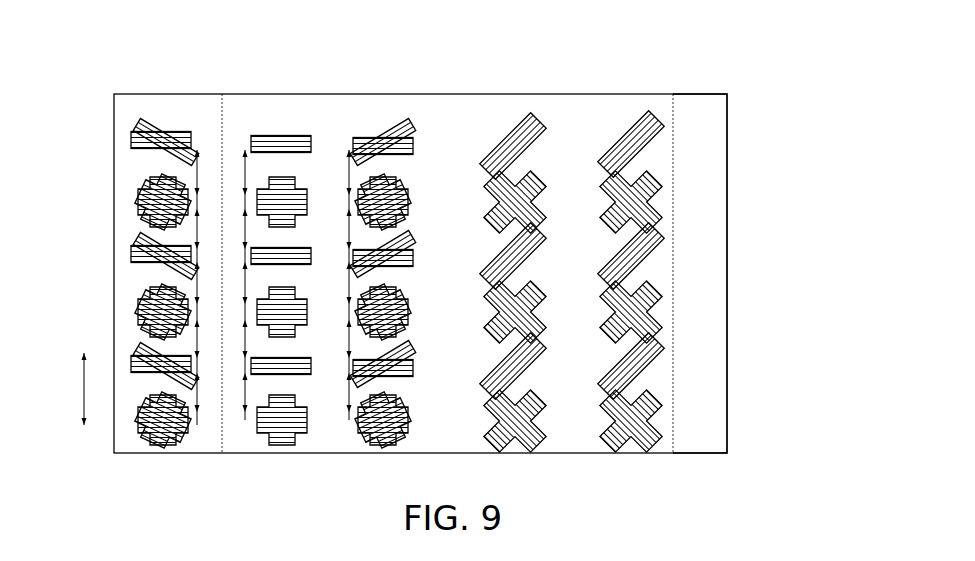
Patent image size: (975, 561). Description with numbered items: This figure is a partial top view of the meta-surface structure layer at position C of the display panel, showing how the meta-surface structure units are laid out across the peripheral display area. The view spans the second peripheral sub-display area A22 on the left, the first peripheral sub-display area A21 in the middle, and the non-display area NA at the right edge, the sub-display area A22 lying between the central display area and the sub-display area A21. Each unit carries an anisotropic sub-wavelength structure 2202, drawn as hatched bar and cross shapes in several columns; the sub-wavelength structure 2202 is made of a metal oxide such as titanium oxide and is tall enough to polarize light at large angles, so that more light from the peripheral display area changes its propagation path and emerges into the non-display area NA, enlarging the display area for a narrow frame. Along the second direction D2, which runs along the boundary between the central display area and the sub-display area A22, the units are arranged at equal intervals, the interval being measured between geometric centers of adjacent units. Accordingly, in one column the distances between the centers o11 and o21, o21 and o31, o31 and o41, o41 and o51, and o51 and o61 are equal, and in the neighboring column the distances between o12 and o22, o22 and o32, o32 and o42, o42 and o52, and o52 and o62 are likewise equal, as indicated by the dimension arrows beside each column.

The position C is at (113, 65).
The second peripheral sub-display area A22 is at (220, 105).
The first peripheral sub-display area A21 is at (460, 260).
The non-display area NA is at (727, 116).
The second direction D2 is at (86, 403).
The anisotropic sub-wavelength structure 2202 is at (645, 355).
The geometric center o11 is at (280, 146).
The geometric center o21 is at (284, 204).
The geometric center o31 is at (282, 258).
The geometric center o41 is at (284, 312).
The geometric center o51 is at (282, 368).
The geometric center o61 is at (284, 422).
The geometric center o12 is at (386, 144).
The geometric center o22 is at (386, 204).
The geometric center o32 is at (386, 256).
The geometric center o42 is at (386, 312).
The geometric center o52 is at (386, 366).
The geometric center o62 is at (386, 422).